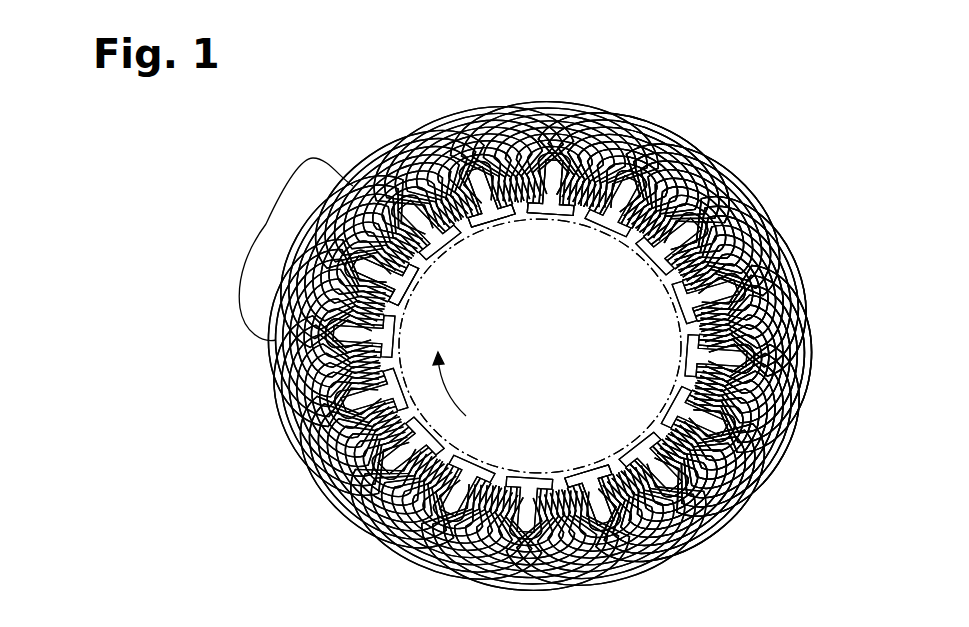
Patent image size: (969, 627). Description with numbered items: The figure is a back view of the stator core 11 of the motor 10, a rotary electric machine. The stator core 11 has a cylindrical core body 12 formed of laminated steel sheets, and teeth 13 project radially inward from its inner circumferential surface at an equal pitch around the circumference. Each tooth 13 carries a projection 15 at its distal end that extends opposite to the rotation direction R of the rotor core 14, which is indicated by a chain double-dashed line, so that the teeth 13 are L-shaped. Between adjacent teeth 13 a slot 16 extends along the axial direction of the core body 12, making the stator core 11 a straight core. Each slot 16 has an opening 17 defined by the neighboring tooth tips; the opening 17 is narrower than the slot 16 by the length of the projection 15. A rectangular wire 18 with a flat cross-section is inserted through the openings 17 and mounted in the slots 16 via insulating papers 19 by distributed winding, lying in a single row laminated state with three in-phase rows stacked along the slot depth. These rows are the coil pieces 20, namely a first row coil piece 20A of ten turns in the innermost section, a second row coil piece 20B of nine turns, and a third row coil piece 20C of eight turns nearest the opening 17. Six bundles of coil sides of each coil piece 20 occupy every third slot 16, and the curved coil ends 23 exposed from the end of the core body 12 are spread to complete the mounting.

The motor 10 is at (757, 142).
The stator core 11 is at (690, 447).
The core body 12 is at (715, 480).
The teeth 13 is at (652, 346).
The rotor core 14 is at (425, 388).
The projection 15 is at (472, 214).
The slot 16 is at (614, 228).
The opening 17 is at (397, 321).
The rectangular wire 18 is at (812, 335).
The insulating paper 19 is at (630, 430).
The coil piece 20 is at (836, 150).
The first row coil piece 20A is at (650, 205).
The second row coil piece 20B is at (670, 235).
The third row coil piece 20C is at (690, 265).
The coil ends 23 is at (258, 216).
The rotation direction R is at (449, 367).